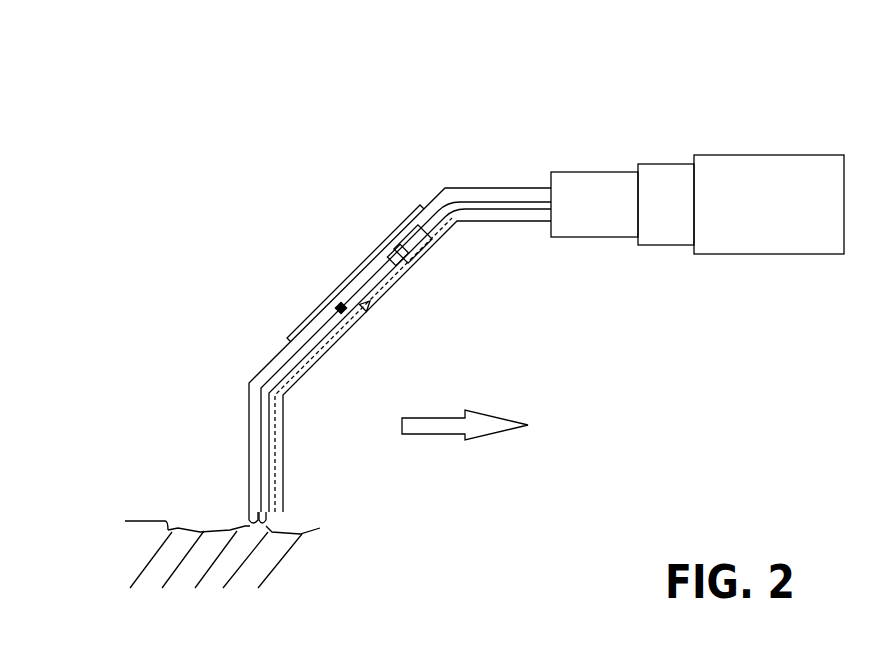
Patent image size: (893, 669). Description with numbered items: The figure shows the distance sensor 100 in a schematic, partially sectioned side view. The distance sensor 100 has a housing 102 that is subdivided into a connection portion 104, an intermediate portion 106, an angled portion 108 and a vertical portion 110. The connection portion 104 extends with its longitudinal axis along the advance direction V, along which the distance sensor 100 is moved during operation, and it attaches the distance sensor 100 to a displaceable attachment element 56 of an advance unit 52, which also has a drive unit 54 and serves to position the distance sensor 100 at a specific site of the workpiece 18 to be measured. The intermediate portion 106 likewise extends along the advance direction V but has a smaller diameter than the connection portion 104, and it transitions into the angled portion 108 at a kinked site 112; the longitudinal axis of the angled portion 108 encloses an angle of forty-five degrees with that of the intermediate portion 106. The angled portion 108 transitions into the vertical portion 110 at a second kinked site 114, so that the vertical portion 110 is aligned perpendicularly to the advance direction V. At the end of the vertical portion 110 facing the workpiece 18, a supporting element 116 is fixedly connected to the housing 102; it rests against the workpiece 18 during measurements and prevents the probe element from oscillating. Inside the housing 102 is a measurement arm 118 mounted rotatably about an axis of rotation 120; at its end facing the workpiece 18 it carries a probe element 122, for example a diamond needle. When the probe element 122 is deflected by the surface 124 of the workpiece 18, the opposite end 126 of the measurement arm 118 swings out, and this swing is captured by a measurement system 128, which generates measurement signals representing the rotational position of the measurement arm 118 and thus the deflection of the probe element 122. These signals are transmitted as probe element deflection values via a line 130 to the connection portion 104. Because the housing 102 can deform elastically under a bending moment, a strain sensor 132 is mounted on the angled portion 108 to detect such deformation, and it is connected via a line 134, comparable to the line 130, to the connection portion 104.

The distance sensor 100 is at (314, 86).
The housing 102 is at (466, 167).
The connection portion 104 is at (638, 257).
The intermediate portion 106 is at (548, 258).
The angled portion 108 is at (395, 171).
The vertical portion 110 is at (232, 378).
The kinked site 112 is at (437, 180).
The second kinked site 114 is at (245, 381).
The supporting element 116 is at (232, 515).
The measurement arm 118 is at (366, 312).
The axis of rotation 120 is at (347, 313).
The probe element 122 is at (268, 523).
The surface 124 is at (125, 521).
The opposite end 126 is at (387, 273).
The measurement system 128 is at (412, 266).
The line 130 is at (500, 211).
The strain sensor 132 is at (355, 271).
The line 134 is at (527, 200).
The workpiece 18 is at (122, 555).
The advance unit 52 is at (843, 257).
The drive unit 54 is at (750, 155).
The attachment element 56 is at (667, 164).
The advance direction V is at (440, 436).